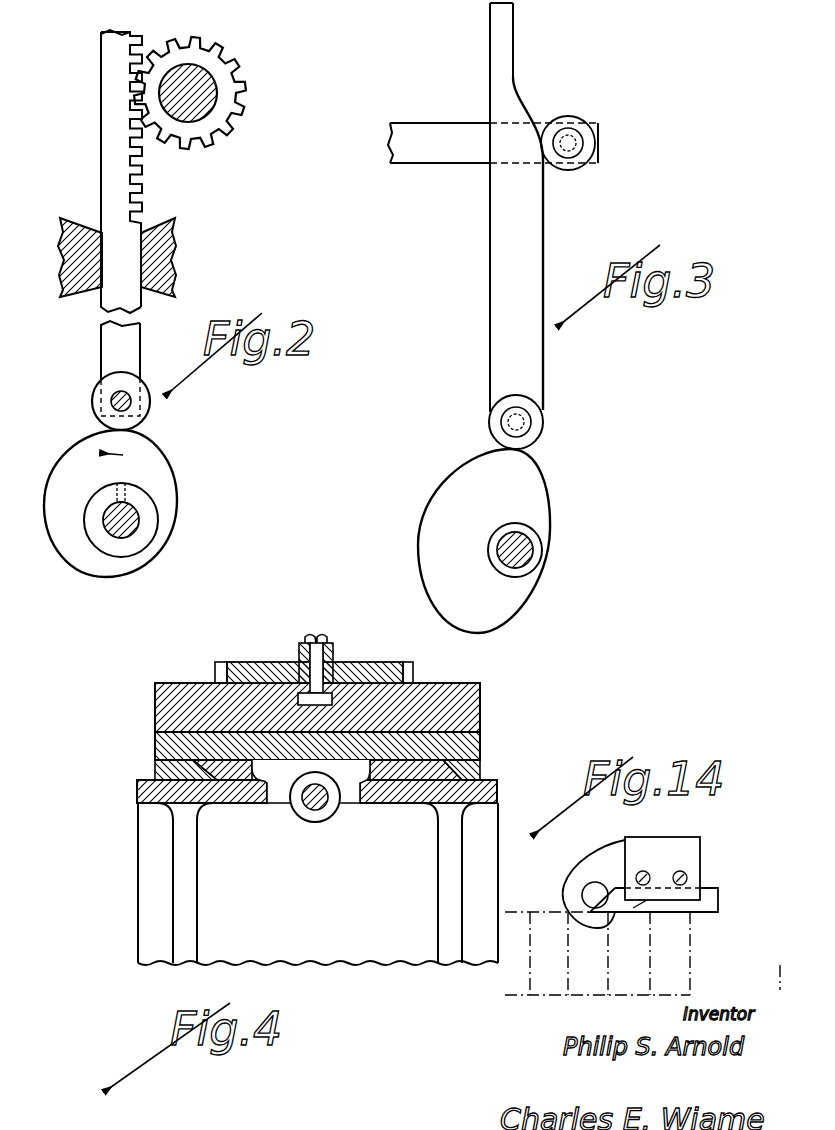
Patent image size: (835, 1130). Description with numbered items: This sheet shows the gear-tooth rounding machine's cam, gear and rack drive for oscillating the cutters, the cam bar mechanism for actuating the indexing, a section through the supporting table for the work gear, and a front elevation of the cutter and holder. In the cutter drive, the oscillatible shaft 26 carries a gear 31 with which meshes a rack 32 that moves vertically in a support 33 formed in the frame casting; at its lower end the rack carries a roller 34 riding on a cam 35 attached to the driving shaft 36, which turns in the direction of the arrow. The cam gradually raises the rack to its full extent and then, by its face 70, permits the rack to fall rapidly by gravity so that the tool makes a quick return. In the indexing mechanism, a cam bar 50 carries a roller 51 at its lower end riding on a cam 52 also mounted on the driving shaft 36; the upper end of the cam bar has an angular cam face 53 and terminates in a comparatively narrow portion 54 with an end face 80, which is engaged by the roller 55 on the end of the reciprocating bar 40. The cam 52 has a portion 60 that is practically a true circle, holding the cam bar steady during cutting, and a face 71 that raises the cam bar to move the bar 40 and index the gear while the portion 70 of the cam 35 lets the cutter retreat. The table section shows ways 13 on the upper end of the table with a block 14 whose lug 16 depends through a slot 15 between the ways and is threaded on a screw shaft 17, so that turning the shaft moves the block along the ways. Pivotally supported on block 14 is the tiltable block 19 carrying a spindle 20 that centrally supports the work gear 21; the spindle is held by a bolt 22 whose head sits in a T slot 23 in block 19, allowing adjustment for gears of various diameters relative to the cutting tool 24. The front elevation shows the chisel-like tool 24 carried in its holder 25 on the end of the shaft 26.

In FIG. 4, the ways 13 is at (423, 763).
In FIG. 4, the block 14 is at (155, 745).
In FIG. 4, the slot 15 is at (275, 800).
In FIG. 4, the lug 16 is at (320, 822).
In FIG. 4, the screw shaft 17 is at (320, 800).
In FIG. 4, the block 19 is at (480, 702).
In FIG. 4, the spindle 20 is at (318, 660).
In FIG. 4, the gear 21 is at (248, 666).
In FIG. 4, the bolt 22 is at (326, 652).
In FIG. 4, the T slot 23 is at (340, 688).
In FIG. 14, the cutting tool 24 is at (642, 953).
In FIG. 14, the holder 25 is at (665, 843).
In FIG. 2, the oscillatible shaft 26 is at (206, 88).
In FIG. 2, the gear 31 is at (236, 122).
In FIG. 2, the rack 32 is at (101, 112).
In FIG. 2, the support 33 is at (172, 262).
In FIG. 2, the roller 34 is at (150, 404).
In FIG. 2, the cam 35 is at (76, 474).
In FIG. 2, the driving shaft 36 is at (134, 521).
In FIG. 3, the driving shaft 36 is at (521, 548).
In FIG. 3, the bar 40 is at (444, 152).
In FIG. 3, the cam bar 50 is at (516, 207).
In FIG. 3, the roller 51 is at (543, 424).
In FIG. 3, the cam 52 is at (544, 470).
In FIG. 3, the angular cam face 53 is at (535, 108).
In FIG. 3, the narrow portion 54 is at (490, 30).
In FIG. 3, the roller 55 is at (574, 166).
In FIG. 3, the portion 60 is at (468, 463).
In FIG. 2, the face 70 is at (177, 490).
In FIG. 3, the face 71 is at (498, 630).
In FIG. 3, the face 80 is at (503, 38).